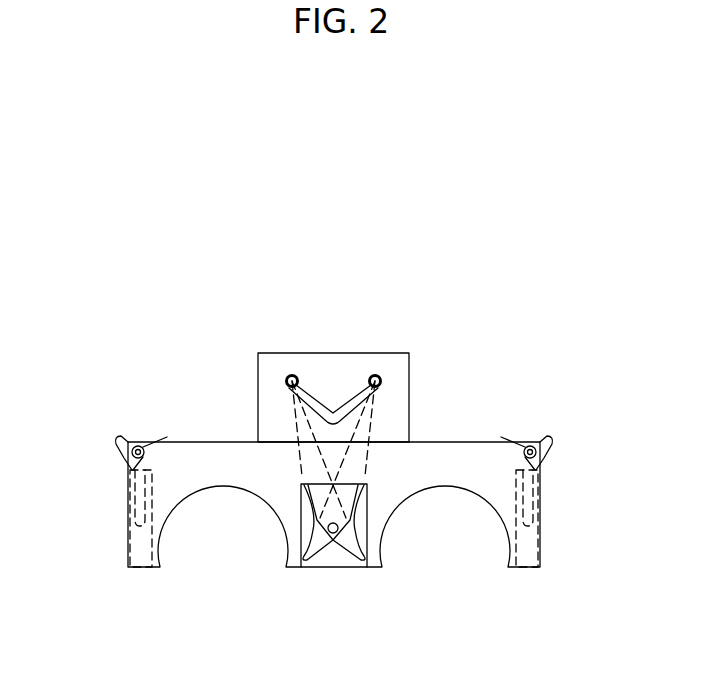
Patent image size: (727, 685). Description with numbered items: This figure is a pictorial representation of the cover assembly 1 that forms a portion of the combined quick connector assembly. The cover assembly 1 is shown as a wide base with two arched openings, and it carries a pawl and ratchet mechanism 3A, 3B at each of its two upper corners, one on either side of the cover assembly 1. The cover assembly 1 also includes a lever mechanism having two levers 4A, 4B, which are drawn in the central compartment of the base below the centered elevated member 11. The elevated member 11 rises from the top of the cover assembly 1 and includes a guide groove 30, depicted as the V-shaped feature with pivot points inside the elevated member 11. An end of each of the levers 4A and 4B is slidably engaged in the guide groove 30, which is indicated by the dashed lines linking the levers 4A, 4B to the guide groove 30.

The cover assembly 1 is at (460, 448).
The elevated member 11 is at (338, 362).
The guide groove 30 is at (352, 397).
The pawl and ratchet mechanism 3A is at (108, 446).
The pawl and ratchet mechanism 3B is at (560, 446).
The lever 4A is at (318, 548).
The lever 4B is at (357, 550).